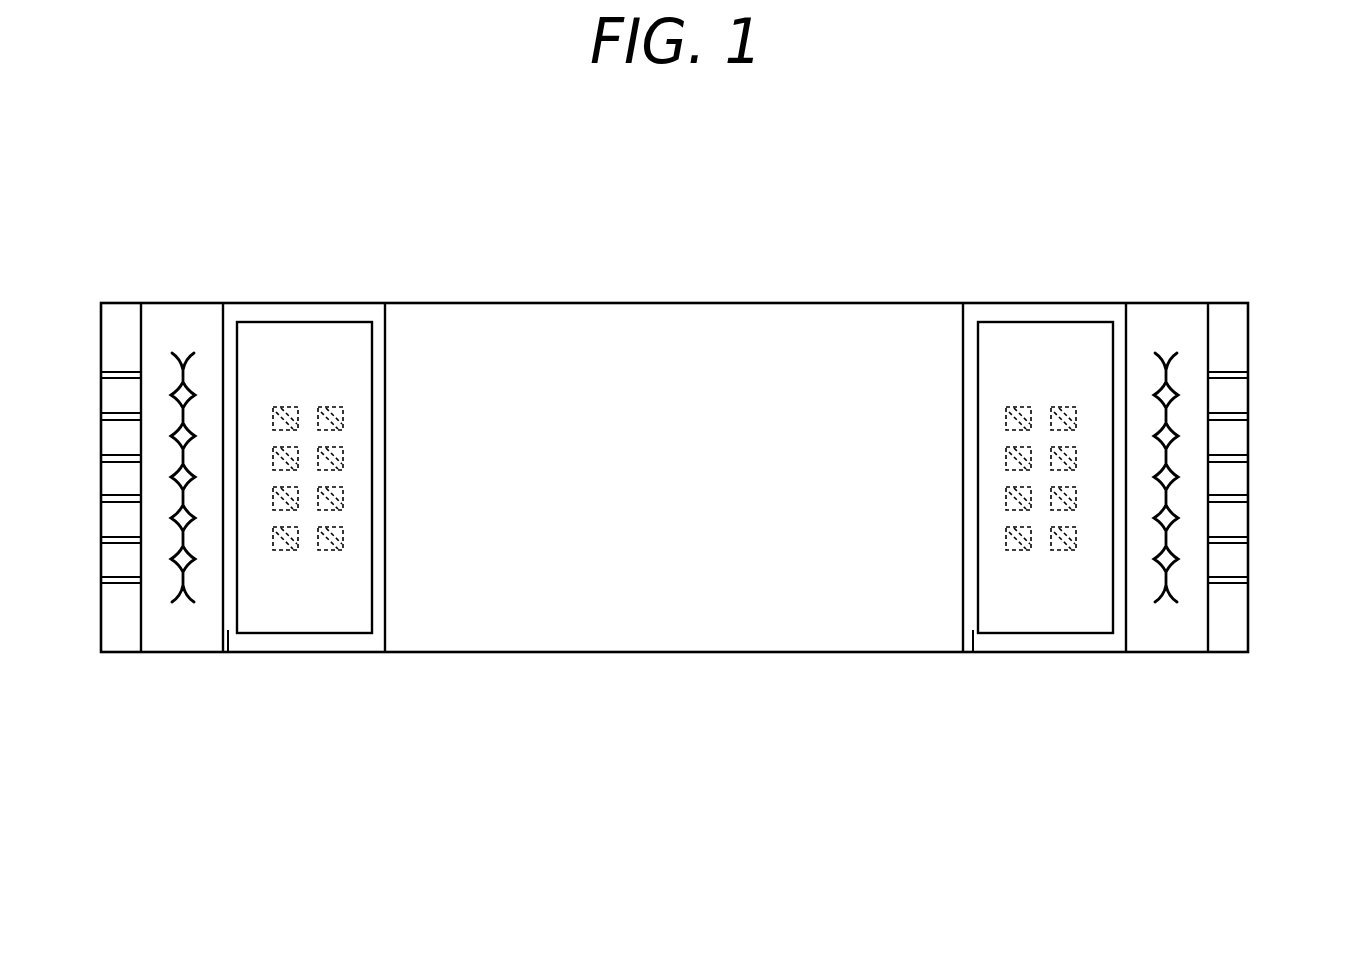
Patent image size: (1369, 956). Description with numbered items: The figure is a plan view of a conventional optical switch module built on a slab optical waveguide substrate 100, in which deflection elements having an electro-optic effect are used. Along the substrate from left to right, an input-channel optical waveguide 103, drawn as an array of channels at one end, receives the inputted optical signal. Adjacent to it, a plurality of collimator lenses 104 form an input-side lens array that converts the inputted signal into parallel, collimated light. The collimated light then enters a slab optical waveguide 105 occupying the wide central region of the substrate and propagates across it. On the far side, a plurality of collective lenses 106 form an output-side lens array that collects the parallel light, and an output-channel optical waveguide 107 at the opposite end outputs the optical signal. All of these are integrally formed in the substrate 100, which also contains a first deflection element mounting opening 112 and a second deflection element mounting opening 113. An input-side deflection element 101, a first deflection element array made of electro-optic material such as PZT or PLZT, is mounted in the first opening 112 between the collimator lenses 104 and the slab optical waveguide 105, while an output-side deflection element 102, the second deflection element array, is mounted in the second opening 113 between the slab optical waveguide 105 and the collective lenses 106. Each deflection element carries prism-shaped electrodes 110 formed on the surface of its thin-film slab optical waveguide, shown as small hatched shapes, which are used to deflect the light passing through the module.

The slab optical waveguide substrate 100 is at (848, 163).
The input-side deflection element 101 is at (385, 290).
The output-side deflection element 102 is at (1126, 290).
The input-channel optical waveguide 103 is at (120, 417).
The collimator lenses 104 is at (178, 291).
The slab optical waveguide 105 is at (962, 290).
The collective lenses 106 is at (1172, 291).
The output-channel optical waveguide 107 is at (1232, 541).
The prism-shaped electrodes 110 is at (328, 552).
The first deflection element mounting opening 112 is at (228, 652).
The second deflection element mounting opening 113 is at (973, 652).